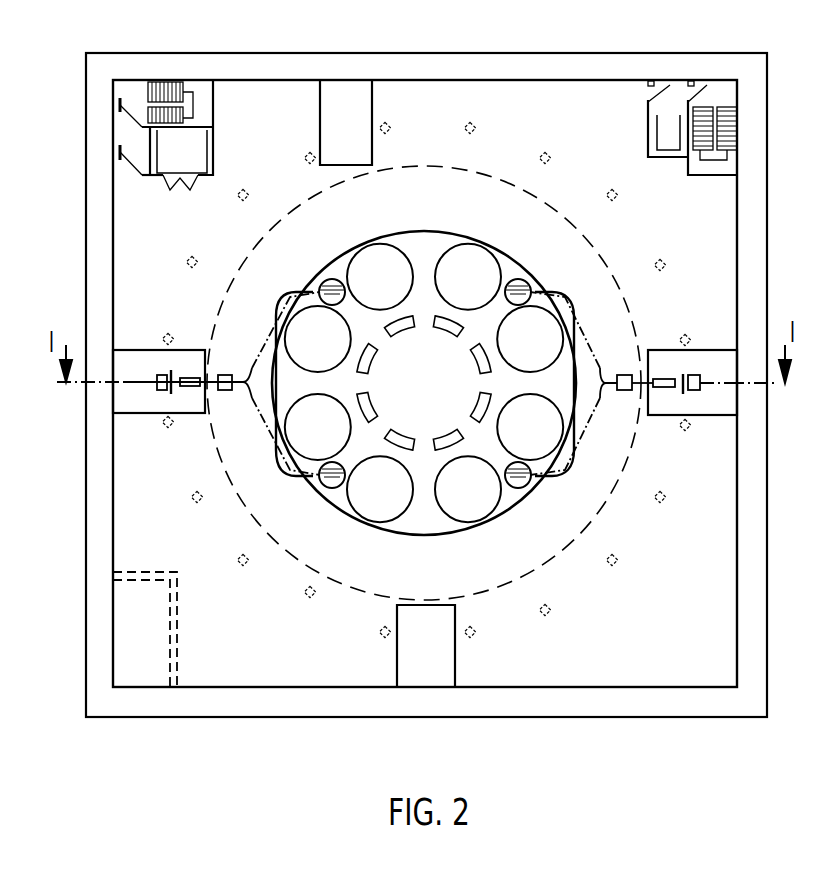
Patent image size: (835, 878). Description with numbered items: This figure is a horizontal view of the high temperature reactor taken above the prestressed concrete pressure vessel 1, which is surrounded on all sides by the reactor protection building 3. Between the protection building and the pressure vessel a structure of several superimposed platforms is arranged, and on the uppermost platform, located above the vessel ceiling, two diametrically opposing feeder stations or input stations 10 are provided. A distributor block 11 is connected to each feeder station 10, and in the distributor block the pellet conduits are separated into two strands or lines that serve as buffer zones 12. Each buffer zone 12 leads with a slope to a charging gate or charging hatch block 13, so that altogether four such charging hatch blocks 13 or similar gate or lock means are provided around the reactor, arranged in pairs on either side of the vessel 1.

The prestressed concrete pressure vessel 1 is at (534, 194).
The reactor protection building 3 is at (580, 63).
The feeder station 10 is at (162, 392).
The distributor block 11 is at (226, 392).
The buffer zone 12 is at (277, 313).
The charging hatch block 13 is at (322, 290).